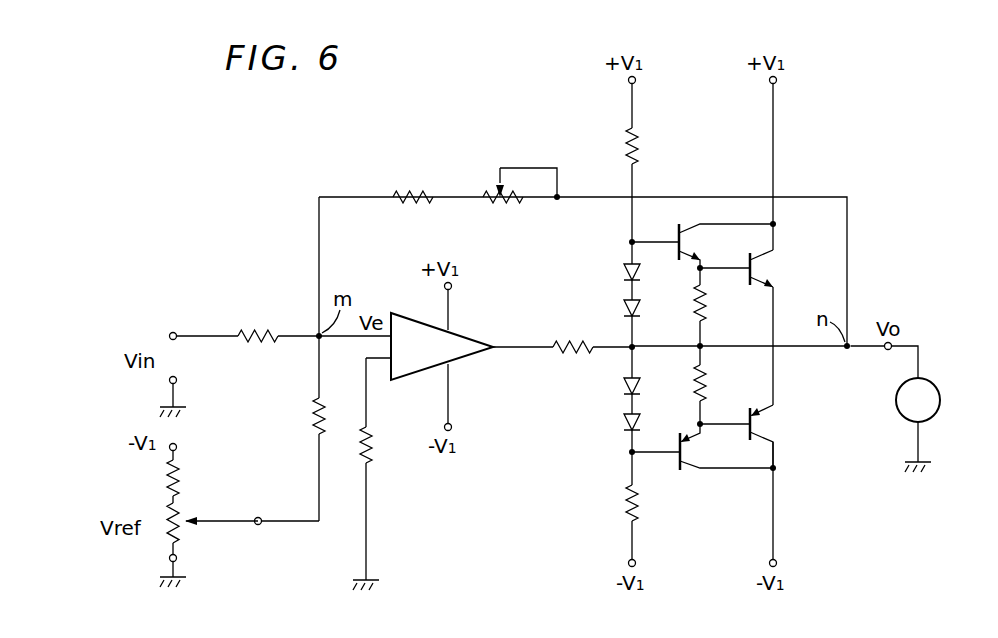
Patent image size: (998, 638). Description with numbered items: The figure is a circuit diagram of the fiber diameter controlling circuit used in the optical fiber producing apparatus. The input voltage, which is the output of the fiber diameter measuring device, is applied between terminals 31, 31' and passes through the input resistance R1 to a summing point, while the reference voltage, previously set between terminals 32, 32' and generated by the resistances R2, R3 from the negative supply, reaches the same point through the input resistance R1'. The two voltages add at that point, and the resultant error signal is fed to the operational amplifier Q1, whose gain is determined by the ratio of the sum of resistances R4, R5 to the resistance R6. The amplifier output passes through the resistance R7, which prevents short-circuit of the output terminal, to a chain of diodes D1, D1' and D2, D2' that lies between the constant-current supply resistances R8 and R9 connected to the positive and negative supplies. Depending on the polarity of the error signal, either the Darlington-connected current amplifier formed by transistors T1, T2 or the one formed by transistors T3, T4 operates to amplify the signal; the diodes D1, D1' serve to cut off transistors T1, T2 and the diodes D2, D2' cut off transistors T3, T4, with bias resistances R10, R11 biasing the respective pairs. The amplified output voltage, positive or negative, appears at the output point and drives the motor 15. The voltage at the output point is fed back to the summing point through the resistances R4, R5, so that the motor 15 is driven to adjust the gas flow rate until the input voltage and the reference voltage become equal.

The motor 15 is at (941, 402).
The terminal 31 is at (174, 320).
The terminal 31' is at (195, 379).
The terminal 32 is at (262, 505).
The terminal 32' is at (197, 566).
The operational amplifier Q1 is at (413, 367).
The input resistance R1 is at (258, 320).
The input resistance R1' is at (297, 416).
The resistance for generating the reference voltage R2 is at (166, 480).
The resistance for generating the reference voltage R3 is at (167, 533).
The resistance R4 is at (414, 204).
The resistance R5 is at (504, 204).
The resistance R6 is at (373, 447).
The resistance for preventing the short-circuit of the output terminal R7 is at (572, 356).
The resistance for supplying constant current R8 is at (639, 146).
The resistance for supplying constant current R9 is at (626, 500).
The bias resistance R10 is at (706, 305).
The bias resistance R11 is at (706, 381).
The diode D1 is at (613, 271).
The diode D1' is at (612, 307).
The diode D2 is at (650, 389).
The diode D2' is at (611, 421).
The transistor T1 is at (673, 233).
The transistor T2 is at (766, 262).
The transistor T3 is at (686, 472).
The transistor T4 is at (763, 423).